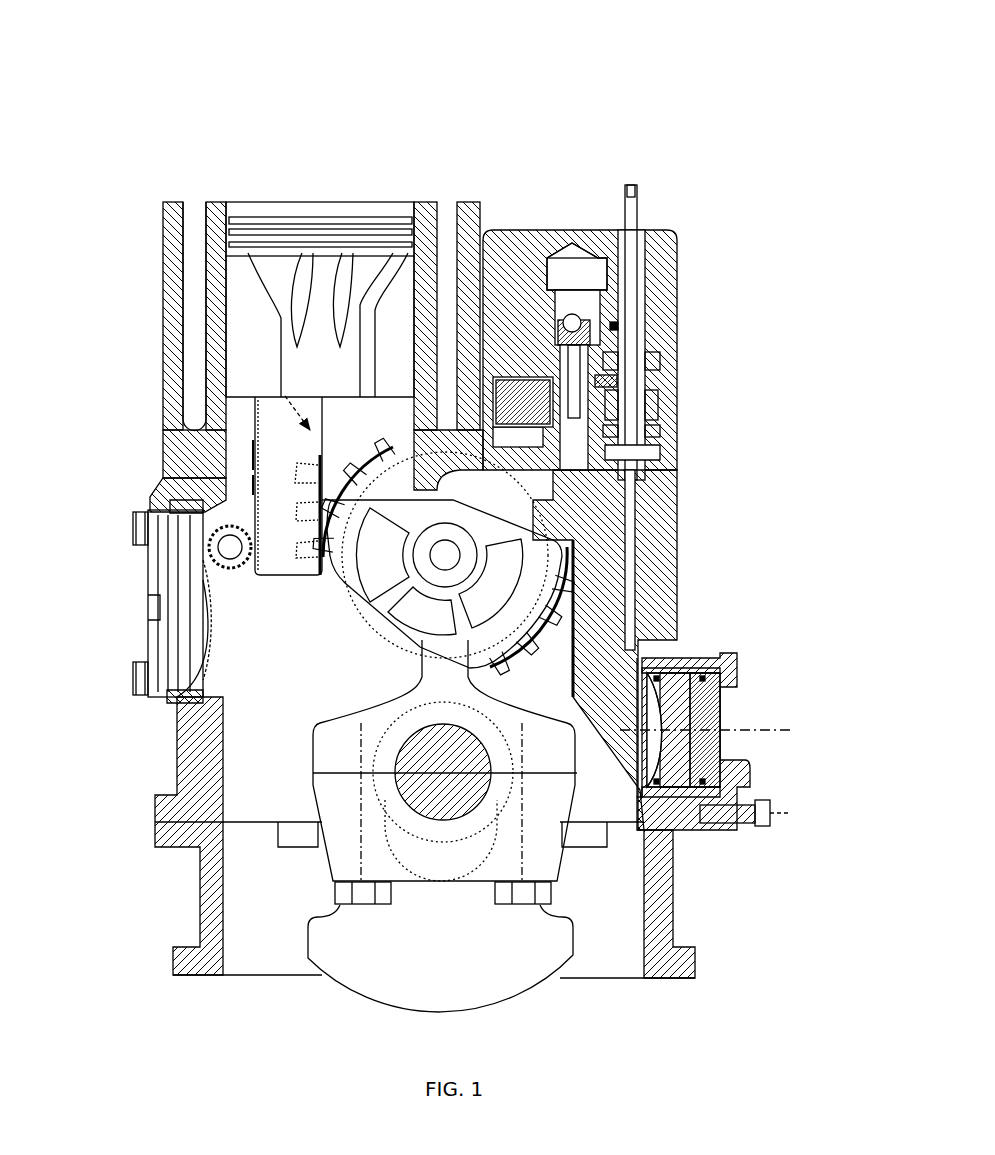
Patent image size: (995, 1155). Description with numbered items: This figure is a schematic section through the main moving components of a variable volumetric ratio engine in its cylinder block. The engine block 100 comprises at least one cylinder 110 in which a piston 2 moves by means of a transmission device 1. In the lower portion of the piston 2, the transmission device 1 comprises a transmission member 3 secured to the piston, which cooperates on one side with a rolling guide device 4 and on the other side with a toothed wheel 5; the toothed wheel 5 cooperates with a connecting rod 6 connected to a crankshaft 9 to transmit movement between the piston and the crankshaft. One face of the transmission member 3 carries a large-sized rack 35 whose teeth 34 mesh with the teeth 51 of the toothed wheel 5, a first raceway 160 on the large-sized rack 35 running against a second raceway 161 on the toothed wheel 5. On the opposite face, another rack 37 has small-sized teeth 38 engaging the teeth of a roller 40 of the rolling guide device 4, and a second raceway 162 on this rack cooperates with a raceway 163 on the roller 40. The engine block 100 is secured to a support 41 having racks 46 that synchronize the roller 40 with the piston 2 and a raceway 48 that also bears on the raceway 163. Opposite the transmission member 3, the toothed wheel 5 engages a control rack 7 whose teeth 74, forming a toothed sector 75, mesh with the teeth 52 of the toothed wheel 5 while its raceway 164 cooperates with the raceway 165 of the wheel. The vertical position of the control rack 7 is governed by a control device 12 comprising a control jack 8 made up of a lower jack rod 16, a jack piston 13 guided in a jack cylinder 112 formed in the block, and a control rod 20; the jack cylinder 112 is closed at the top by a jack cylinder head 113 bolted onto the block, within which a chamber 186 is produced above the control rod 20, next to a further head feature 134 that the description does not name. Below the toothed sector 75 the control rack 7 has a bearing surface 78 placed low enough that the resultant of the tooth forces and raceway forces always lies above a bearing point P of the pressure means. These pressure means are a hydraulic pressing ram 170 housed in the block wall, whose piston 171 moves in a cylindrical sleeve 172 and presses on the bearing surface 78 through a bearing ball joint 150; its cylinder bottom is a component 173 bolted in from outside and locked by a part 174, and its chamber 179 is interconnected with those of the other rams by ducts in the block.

The engine block 100 is at (152, 172).
The cylinder 110 is at (221, 205).
The piston 2 is at (258, 200).
The transmission member 3 is at (253, 422).
The teeth 34 is at (282, 393).
The small-sized teeth 38 is at (250, 455).
The second raceway 162 is at (253, 485).
The rolling guide device 4 is at (215, 515).
The roller 40 is at (225, 547).
The racks 46 is at (195, 580).
The support 41 is at (160, 600).
The raceway 163 is at (180, 650).
The raceway 48 is at (165, 690).
The rack 37 is at (253, 590).
The transmission device 1 is at (332, 662).
The connecting rod 6 is at (335, 750).
The crankshaft 9 is at (517, 977).
The jack cylinder head 113 is at (672, 238).
The jack cylinder 112 is at (497, 357).
The chamber 186 is at (545, 245).
The valve chamber 134 is at (573, 262).
The control rod 20 is at (640, 200).
The control device 12 is at (633, 112).
The control jack 8 is at (640, 322).
The jack piston 13 is at (650, 362).
The lower jack rod 16 is at (605, 433).
The control rack 7 is at (627, 523).
The toothed wheel 5 is at (545, 528).
The toothed sector 75 is at (620, 557).
The teeth 52 is at (560, 597).
The raceway 165 is at (565, 617).
The raceway 164 is at (567, 640).
The teeth 74 is at (570, 660).
The first raceway 160 is at (336, 470).
The large-sized rack 35 is at (373, 465).
The teeth 51 is at (388, 445).
The second raceway 161 is at (430, 440).
The hydraulic pressing ram 170 is at (700, 732).
The cylindrical sleeve 172 is at (730, 664).
The chambers 179 is at (690, 665).
The bearing ball joint 150 is at (653, 720).
The cylinder bottom component 173 is at (720, 742).
The locking part 174 is at (737, 778).
The piston 171 is at (770, 820).
The bearing surface 78 is at (660, 810).
The bearing point P is at (637, 773).